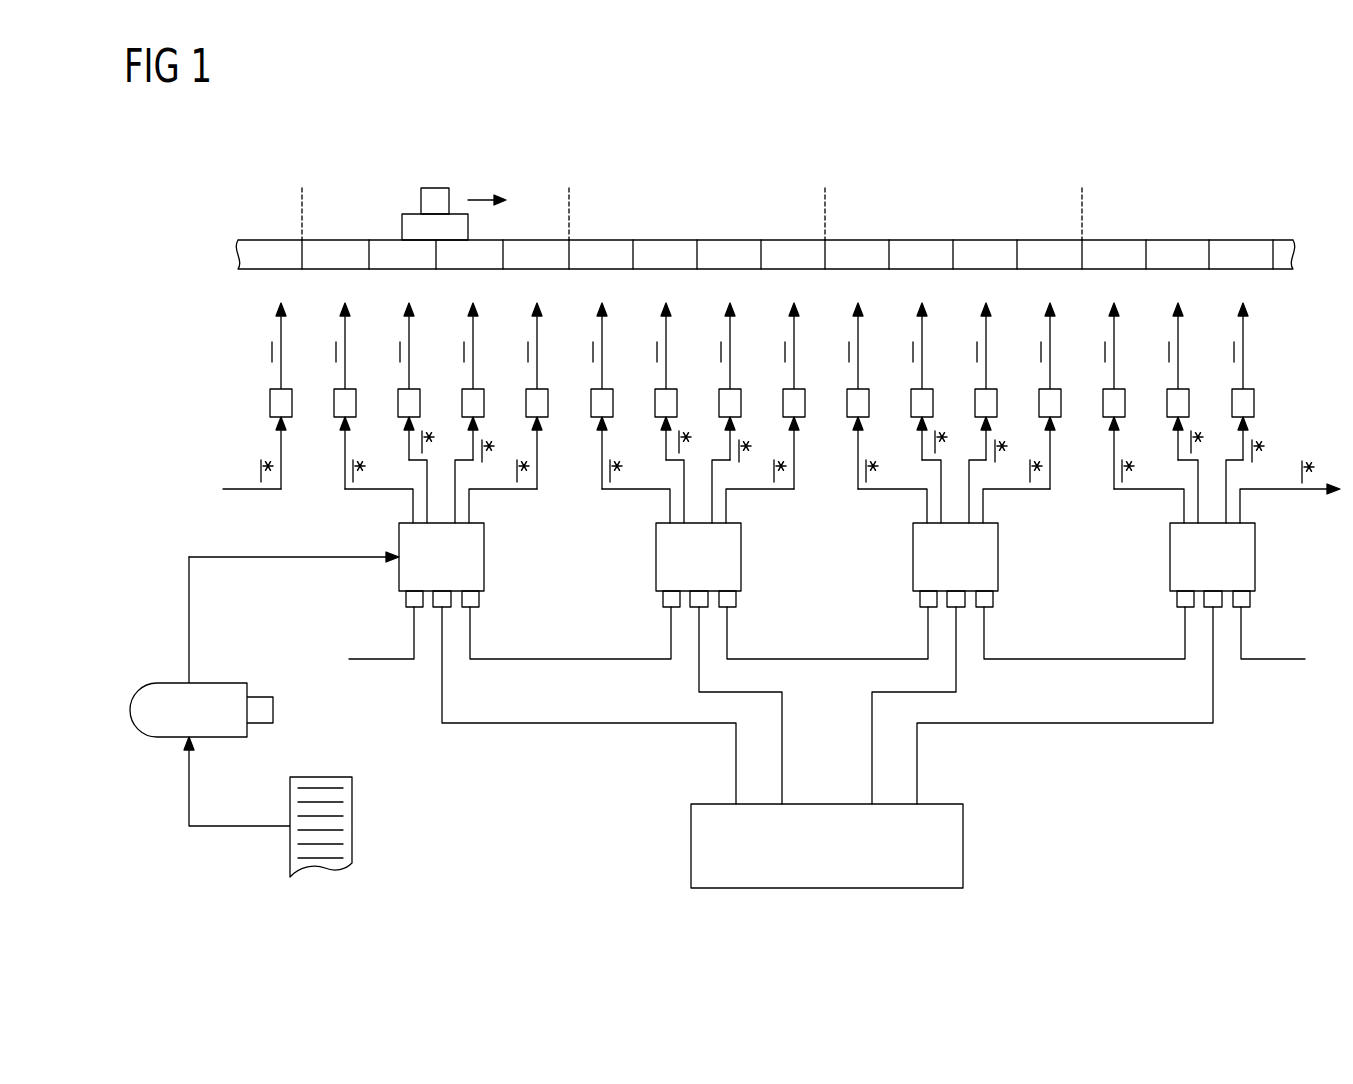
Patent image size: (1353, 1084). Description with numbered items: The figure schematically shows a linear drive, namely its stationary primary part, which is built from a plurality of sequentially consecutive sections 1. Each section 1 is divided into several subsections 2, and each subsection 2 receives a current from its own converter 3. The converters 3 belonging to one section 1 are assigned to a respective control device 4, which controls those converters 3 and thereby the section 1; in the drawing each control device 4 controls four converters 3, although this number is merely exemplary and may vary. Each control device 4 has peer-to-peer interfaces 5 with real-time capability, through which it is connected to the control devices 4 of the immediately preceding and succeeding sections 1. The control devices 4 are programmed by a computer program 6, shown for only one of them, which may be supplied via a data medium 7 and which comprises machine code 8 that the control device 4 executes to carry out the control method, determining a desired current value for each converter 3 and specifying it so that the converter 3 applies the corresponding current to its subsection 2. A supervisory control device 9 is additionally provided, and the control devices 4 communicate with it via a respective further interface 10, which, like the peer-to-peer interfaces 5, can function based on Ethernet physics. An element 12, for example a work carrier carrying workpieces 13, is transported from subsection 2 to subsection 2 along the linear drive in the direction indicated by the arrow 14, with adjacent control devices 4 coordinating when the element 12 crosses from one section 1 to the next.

The section 1 is at (432, 158).
The subsection 2 is at (1258, 250).
The converter 3 is at (781, 410).
The control device 4 is at (722, 551).
The peer-to-peer interface 5 is at (826, 625).
The computer program 6 is at (333, 871).
The data medium 7 is at (178, 738).
The machine code 8 is at (340, 815).
The supervisory control device 9 is at (691, 847).
The further interface 10 is at (807, 705).
The element 12 is at (410, 214).
The workpiece 13 is at (440, 188).
The arrow 14 is at (479, 194).